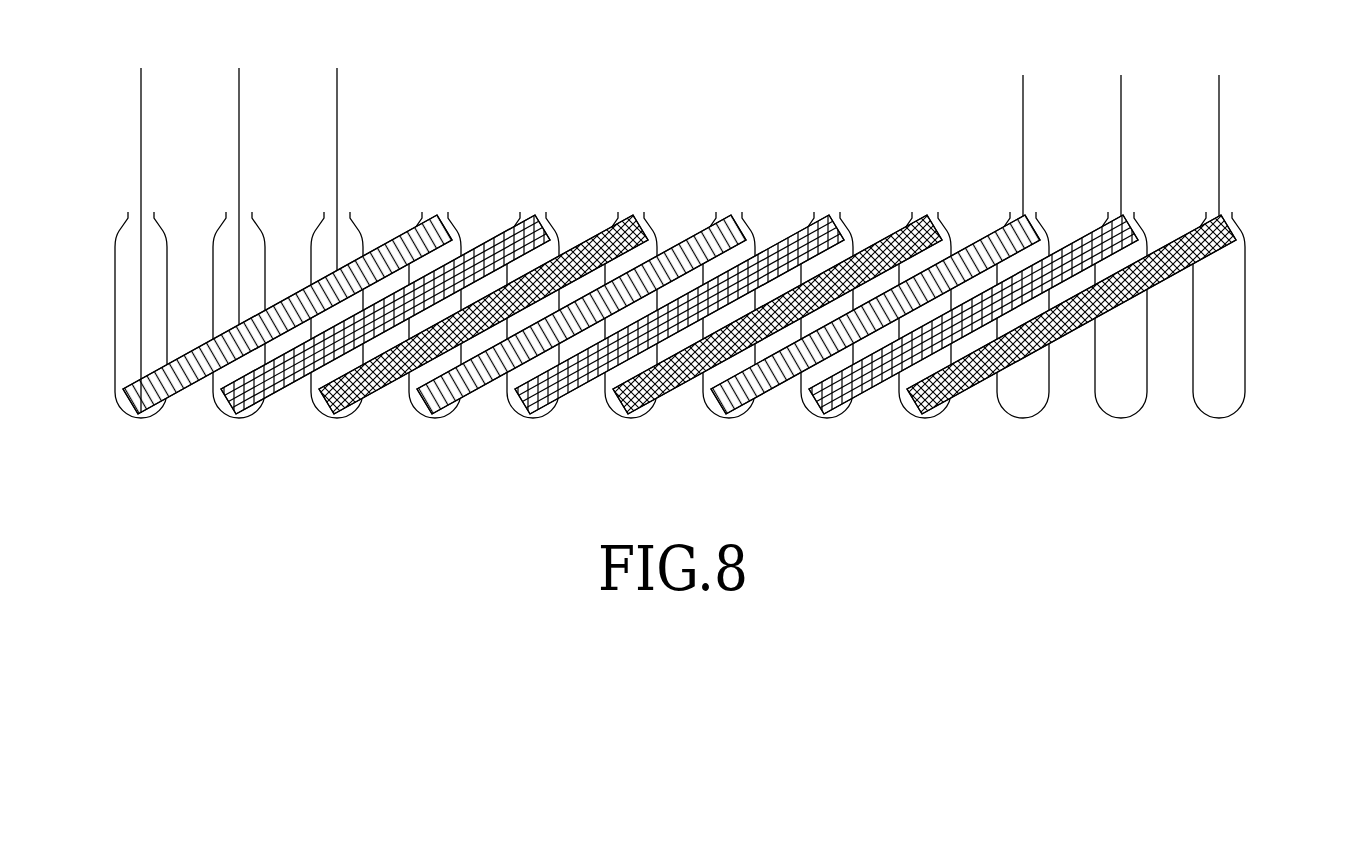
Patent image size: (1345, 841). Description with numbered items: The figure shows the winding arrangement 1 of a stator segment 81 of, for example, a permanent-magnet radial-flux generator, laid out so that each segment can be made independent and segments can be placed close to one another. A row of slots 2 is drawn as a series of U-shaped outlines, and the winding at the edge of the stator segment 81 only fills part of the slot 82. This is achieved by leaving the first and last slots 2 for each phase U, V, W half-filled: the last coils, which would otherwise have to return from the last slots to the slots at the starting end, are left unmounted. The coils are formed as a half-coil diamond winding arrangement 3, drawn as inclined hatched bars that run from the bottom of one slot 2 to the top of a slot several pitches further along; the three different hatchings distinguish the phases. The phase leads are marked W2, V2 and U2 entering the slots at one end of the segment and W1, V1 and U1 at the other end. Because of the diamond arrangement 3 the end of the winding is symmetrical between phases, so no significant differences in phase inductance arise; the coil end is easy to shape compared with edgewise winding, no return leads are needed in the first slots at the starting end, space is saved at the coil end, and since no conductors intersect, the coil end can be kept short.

The stator winding 1 is at (623, 131).
The slot 2 is at (108, 283).
The half-coil diamond winding arrangement 3 is at (1007, 198).
The stator segment 81 is at (1168, 398).
The slot 82 is at (1227, 312).
The W-phase second lead wire W2 is at (140, 225).
The V-phase second lead wire V2 is at (237, 182).
The U-phase second lead wire U2 is at (336, 154).
The W-phase first lead wire W1 is at (1023, 131).
The V-phase first lead wire V1 is at (1120, 131).
The U-phase first lead wire U1 is at (1219, 131).